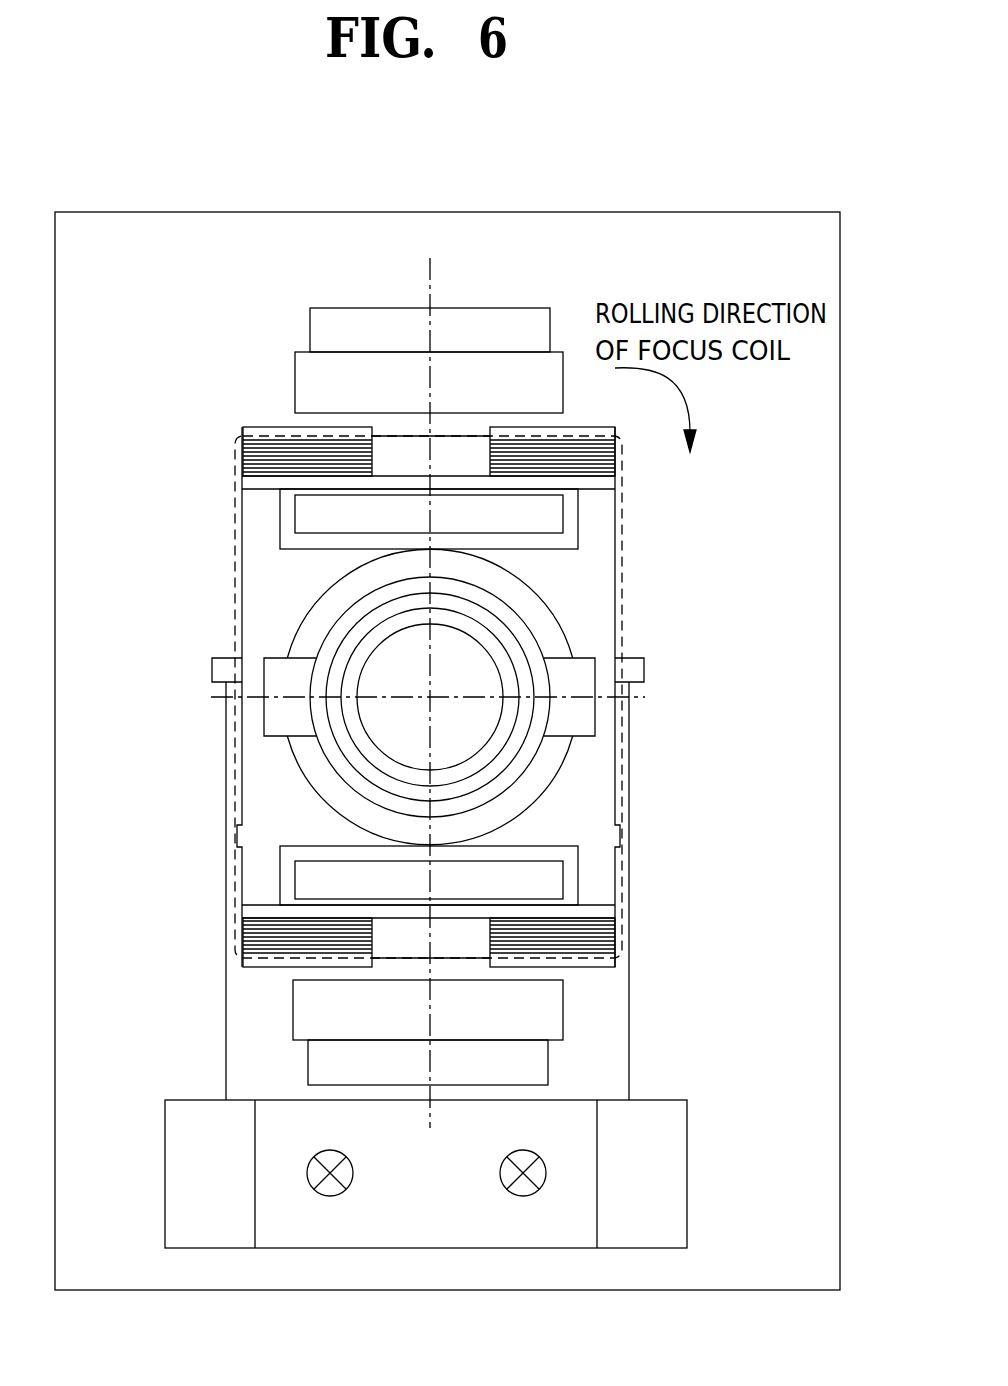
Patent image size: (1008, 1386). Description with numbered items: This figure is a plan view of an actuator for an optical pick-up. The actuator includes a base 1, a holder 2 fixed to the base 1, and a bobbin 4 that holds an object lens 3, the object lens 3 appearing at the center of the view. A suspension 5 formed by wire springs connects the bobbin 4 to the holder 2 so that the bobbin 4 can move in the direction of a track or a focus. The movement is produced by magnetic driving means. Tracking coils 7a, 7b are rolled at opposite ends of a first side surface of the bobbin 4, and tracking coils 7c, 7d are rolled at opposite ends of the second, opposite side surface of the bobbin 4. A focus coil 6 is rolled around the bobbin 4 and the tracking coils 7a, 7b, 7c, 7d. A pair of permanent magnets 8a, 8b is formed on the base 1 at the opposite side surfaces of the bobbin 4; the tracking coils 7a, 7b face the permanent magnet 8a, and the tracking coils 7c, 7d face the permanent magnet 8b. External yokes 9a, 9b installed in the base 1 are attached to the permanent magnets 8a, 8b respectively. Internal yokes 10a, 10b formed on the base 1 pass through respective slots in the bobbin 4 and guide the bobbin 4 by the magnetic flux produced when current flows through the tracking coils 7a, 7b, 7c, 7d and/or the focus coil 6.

The base 1 is at (840, 515).
The holder 2 is at (687, 1153).
The object lens 3 is at (543, 652).
The bobbin 4 is at (270, 597).
The suspension 5 is at (225, 740).
The focus coil 6 is at (235, 785).
The tracking coil 7a is at (250, 460).
The tracking coil 7b is at (610, 462).
The tracking coil 7c is at (248, 931).
The tracking coil 7d is at (612, 938).
The permanent magnet 8a is at (310, 381).
The permanent magnet 8b is at (563, 1005).
The external yoke 9a is at (333, 323).
The external yoke 9b is at (548, 1068).
The internal yoke 10a is at (563, 518).
The internal yoke 10b is at (563, 880).